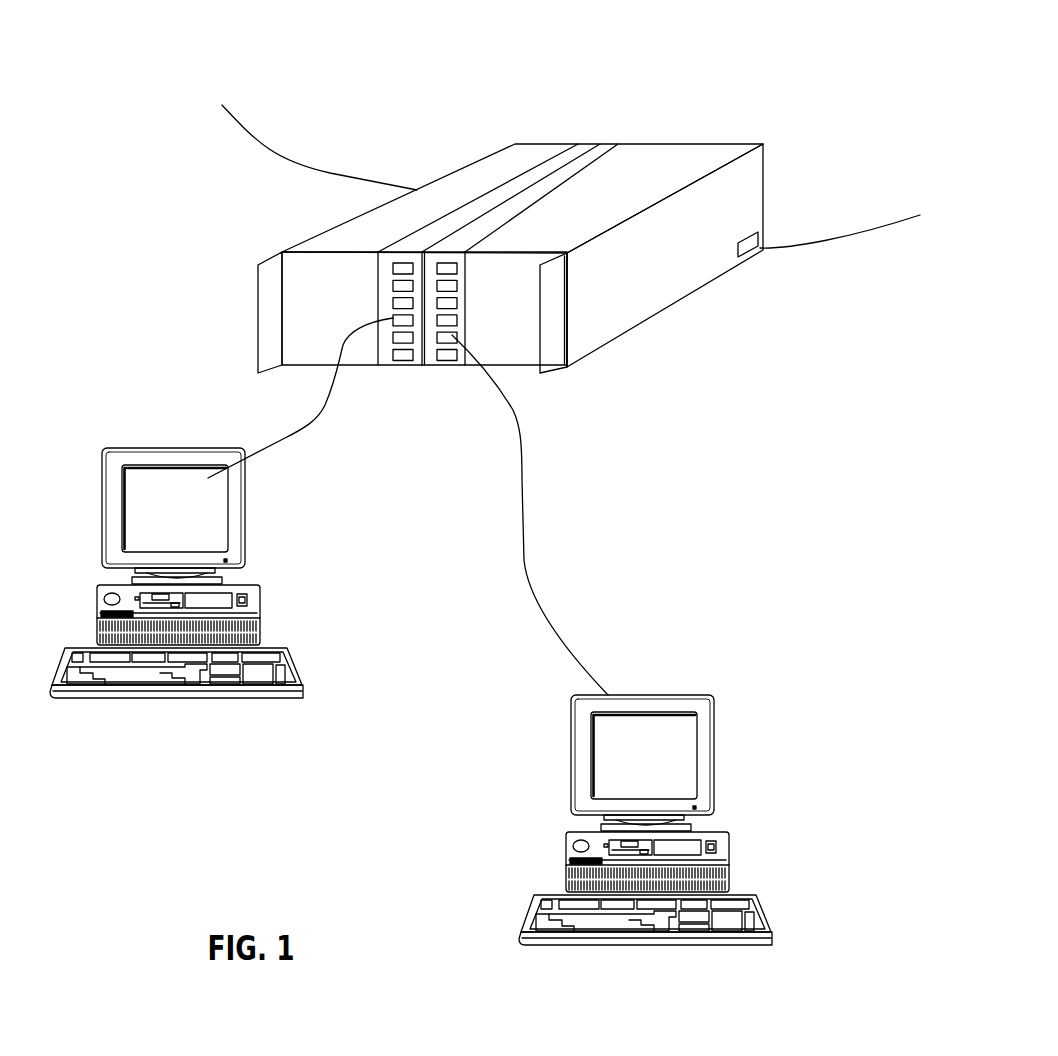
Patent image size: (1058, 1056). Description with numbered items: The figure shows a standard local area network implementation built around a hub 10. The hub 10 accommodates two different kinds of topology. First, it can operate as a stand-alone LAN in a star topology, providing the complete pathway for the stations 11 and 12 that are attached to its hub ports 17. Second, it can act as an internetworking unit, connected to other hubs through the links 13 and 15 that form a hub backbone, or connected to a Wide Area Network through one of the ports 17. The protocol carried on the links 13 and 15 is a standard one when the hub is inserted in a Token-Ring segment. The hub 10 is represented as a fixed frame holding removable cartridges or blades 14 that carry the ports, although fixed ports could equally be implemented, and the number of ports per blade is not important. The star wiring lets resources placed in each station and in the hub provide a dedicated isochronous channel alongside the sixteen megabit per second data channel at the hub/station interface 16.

The hub 10 is at (663, 144).
The station 11 is at (653, 695).
The station 12 is at (133, 448).
The link 13 is at (812, 243).
The removable cartridges or blades 14 is at (575, 162).
The link 15 is at (283, 157).
The hub/station interface 16 is at (282, 443).
The hub ports 17 is at (455, 358).